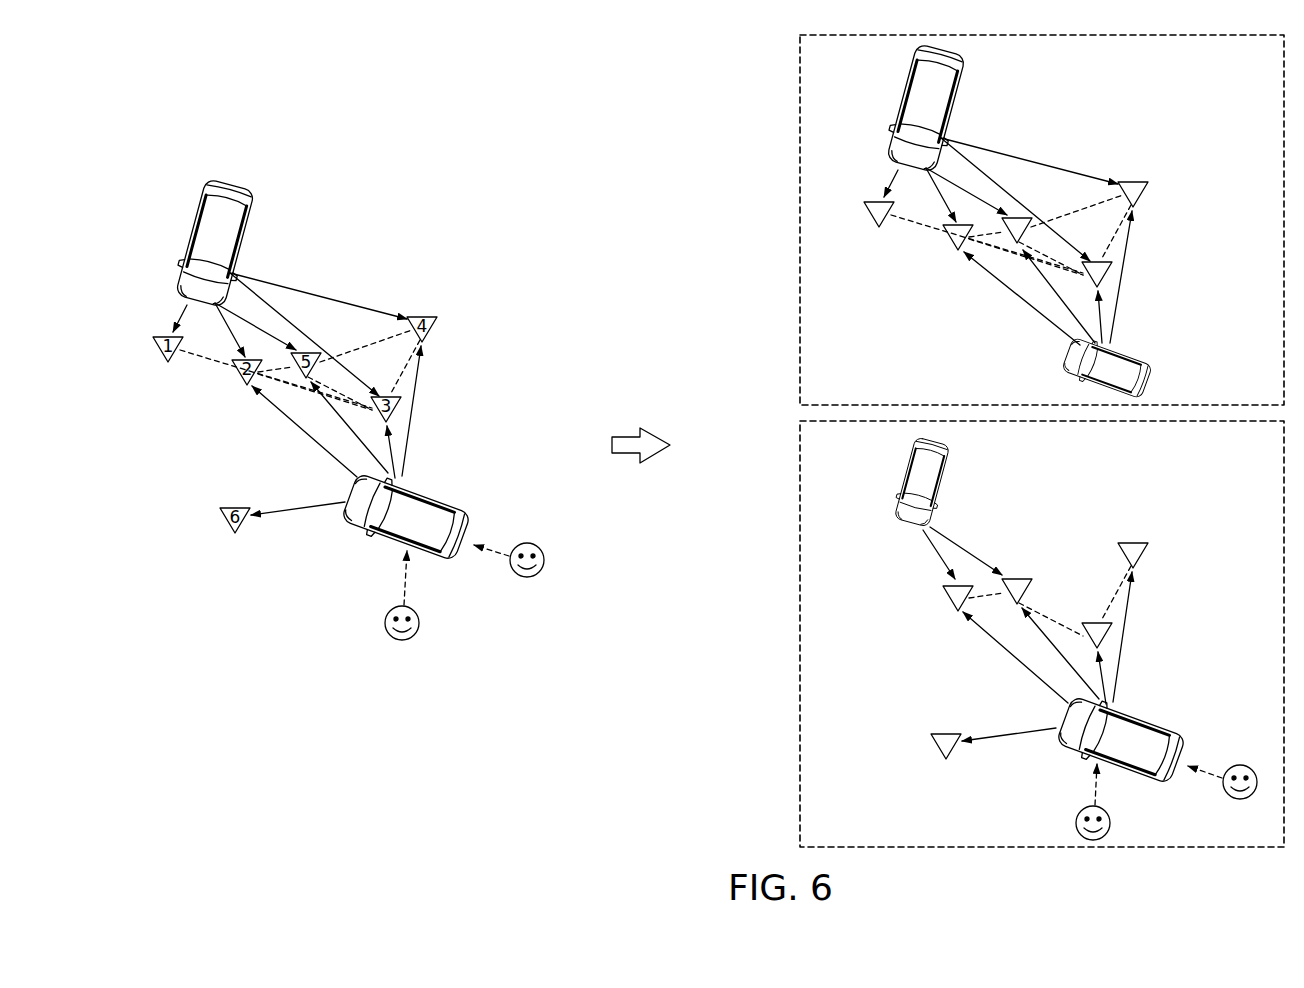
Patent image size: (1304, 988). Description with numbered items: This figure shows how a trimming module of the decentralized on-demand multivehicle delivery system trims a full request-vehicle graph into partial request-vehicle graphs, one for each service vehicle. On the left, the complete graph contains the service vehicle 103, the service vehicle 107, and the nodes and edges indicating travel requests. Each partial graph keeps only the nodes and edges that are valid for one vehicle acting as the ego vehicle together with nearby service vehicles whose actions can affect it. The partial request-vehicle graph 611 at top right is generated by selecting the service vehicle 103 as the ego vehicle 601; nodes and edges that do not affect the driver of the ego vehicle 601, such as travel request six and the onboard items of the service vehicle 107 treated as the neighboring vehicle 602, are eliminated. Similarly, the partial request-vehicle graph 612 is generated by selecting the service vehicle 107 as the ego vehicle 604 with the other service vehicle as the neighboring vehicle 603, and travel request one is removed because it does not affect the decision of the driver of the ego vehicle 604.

The service vehicle 103 is at (250, 197).
The service vehicle 107 is at (373, 524).
The ego vehicle 601 is at (962, 95).
The neighboring vehicle 602 is at (1066, 362).
The neighboring vehicle 603 is at (947, 459).
The ego vehicle 604 is at (1068, 745).
The partial request-vehicle graph 611 is at (800, 143).
The partial request-vehicle graph 612 is at (800, 578).